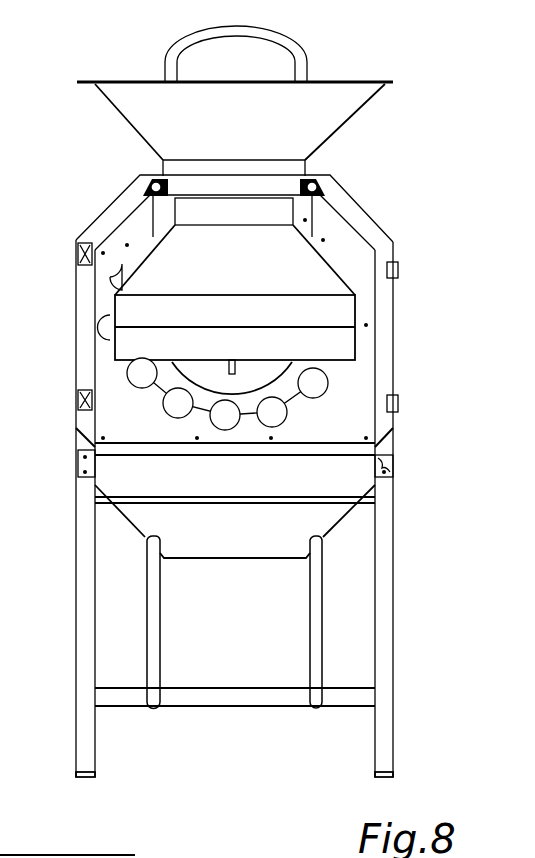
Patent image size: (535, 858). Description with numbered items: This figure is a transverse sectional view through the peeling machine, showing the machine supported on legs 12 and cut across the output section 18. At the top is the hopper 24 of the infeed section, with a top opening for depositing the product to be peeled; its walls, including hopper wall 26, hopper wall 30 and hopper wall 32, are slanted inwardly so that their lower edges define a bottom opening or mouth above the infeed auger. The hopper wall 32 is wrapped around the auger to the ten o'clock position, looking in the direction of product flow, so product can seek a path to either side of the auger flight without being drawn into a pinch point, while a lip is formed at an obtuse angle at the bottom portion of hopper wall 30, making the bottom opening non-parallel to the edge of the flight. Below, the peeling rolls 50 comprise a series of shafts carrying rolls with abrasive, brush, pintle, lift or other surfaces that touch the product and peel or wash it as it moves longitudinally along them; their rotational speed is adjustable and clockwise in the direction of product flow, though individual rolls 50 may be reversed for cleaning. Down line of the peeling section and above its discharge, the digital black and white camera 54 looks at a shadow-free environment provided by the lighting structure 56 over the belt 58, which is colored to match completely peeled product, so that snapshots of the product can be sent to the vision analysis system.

The legs 12 is at (85, 763).
The output section 18 is at (88, 220).
The hopper 24 is at (212, 99).
The hopper wall 26 is at (132, 128).
The hopper wall 30 is at (340, 126).
The hopper wall 32 is at (234, 141).
The peeling rolls 50 is at (178, 403).
The digital black and white camera 54 is at (235, 246).
The lighting structure 56 is at (275, 315).
The belt 58 is at (233, 475).